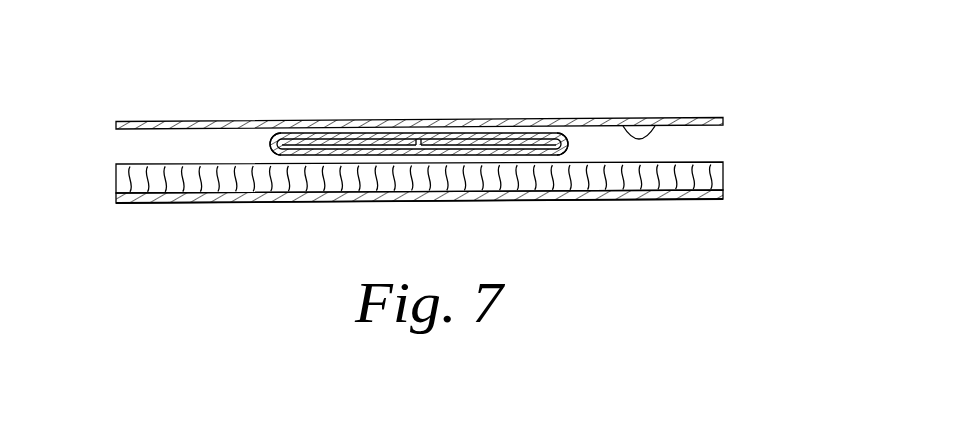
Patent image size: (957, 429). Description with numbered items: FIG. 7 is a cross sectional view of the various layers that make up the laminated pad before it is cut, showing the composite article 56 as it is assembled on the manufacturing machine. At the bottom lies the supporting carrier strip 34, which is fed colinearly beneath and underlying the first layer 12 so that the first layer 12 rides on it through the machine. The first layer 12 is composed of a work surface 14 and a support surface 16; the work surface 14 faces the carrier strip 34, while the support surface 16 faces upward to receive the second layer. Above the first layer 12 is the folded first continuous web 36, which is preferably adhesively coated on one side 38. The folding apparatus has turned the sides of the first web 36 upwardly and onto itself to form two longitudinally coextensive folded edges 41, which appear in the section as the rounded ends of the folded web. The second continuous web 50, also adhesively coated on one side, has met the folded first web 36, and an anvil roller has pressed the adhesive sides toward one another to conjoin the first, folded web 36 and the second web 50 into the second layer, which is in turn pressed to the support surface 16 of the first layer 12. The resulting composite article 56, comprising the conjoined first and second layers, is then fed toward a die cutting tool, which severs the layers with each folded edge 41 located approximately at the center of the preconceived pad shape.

The first layer 12 is at (446, 207).
The work surface 14 is at (138, 200).
The support surface 16 is at (222, 165).
The supporting carrier strip 34 is at (708, 201).
The first continuous web 36 is at (688, 118).
The adhesively coated side 38 is at (656, 126).
The folded edges 41 is at (268, 143).
The second continuous web 50 is at (353, 133).
The composite article 56 is at (137, 104).